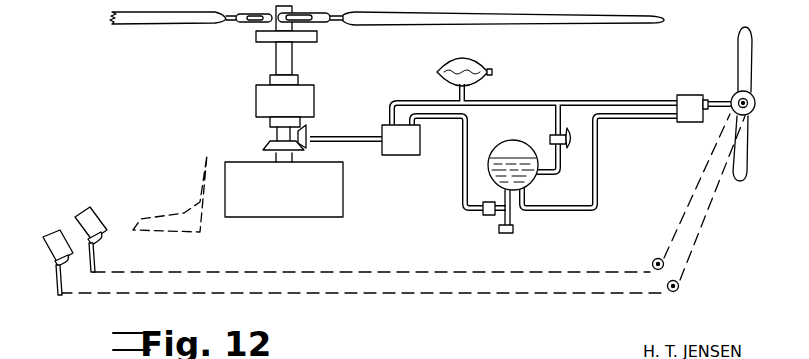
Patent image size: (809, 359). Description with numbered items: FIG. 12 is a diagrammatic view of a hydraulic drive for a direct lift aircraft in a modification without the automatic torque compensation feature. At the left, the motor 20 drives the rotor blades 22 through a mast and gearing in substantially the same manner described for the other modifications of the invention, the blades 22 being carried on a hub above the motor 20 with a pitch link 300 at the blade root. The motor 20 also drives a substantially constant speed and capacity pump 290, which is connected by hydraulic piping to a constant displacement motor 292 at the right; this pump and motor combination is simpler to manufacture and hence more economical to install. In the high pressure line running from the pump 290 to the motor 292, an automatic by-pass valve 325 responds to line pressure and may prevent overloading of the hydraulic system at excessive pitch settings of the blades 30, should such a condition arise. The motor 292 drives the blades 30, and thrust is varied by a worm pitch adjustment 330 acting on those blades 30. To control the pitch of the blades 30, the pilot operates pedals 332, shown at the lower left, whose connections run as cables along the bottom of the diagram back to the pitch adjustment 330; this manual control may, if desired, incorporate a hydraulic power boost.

The rotor blade pitch link 300 is at (105, 12).
The rotor blades 22 is at (186, 24).
The motor 20 is at (300, 203).
The pump 290 is at (385, 155).
The motor 292 is at (685, 95).
The automatic by-pass valve 325 is at (551, 137).
The worm pitch adjustment 330 is at (732, 108).
The blades 30 is at (754, 68).
The pedals 332 is at (57, 232).